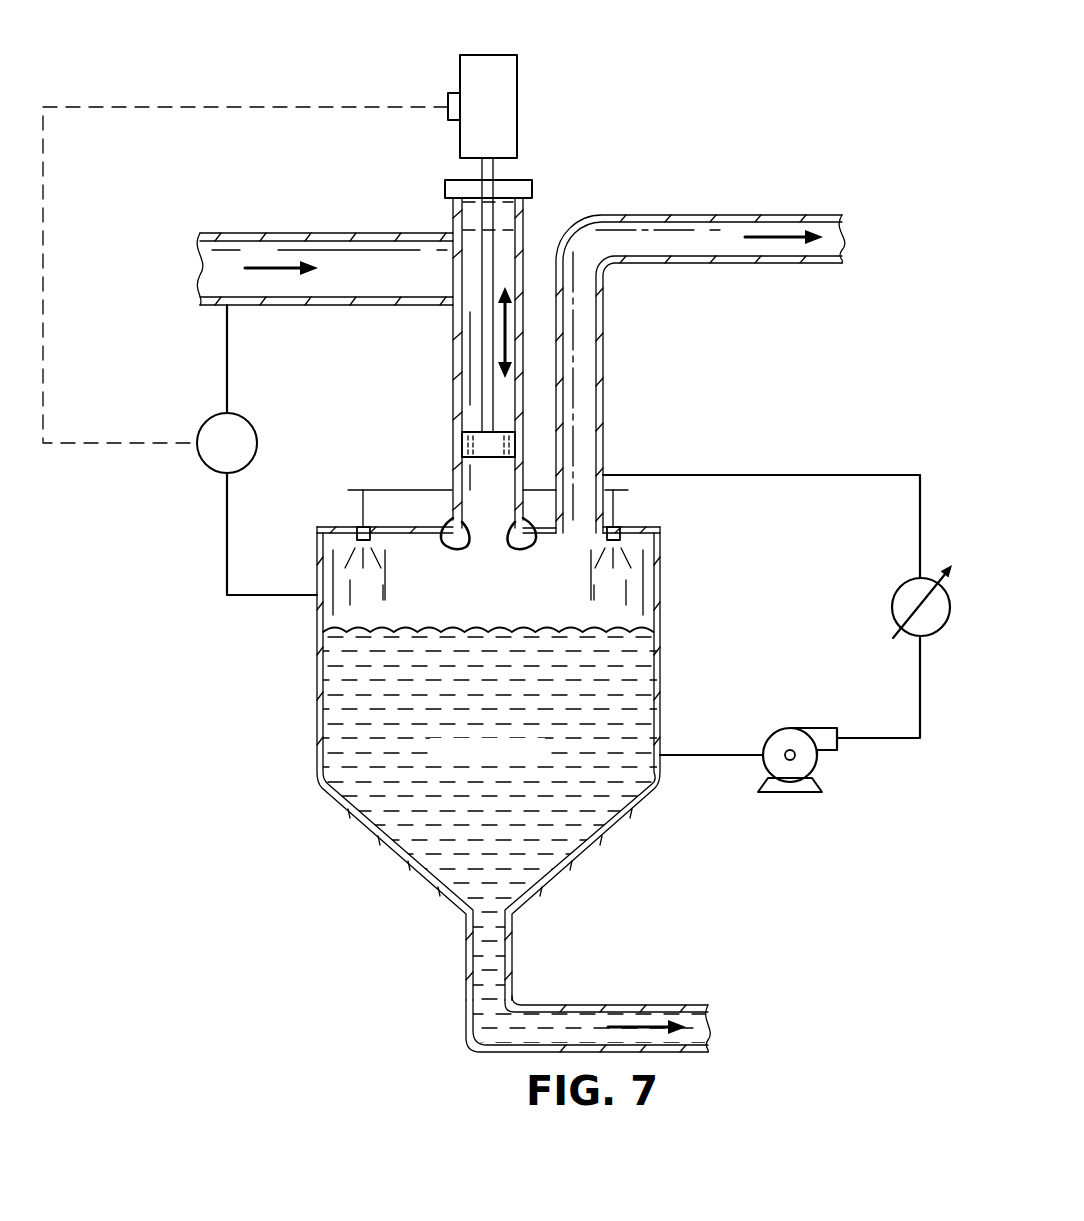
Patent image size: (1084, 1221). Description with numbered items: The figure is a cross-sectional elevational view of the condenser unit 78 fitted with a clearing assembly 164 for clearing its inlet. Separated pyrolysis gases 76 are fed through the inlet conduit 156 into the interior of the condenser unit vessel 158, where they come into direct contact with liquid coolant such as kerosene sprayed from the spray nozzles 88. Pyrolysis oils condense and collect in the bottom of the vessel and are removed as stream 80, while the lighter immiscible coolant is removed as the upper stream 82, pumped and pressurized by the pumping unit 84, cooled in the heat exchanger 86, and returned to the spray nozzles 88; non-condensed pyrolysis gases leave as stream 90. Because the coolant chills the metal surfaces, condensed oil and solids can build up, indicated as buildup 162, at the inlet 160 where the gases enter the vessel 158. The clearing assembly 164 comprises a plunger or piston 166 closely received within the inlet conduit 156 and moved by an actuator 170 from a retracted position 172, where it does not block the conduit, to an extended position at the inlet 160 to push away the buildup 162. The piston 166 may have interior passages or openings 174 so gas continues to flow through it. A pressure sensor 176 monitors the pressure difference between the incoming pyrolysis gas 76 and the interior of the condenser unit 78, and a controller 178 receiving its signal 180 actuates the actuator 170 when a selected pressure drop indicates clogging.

The pyrolysis gases 76 is at (262, 266).
The condenser unit 78 is at (476, 766).
The stream 80 is at (645, 1005).
The upper stream 82 is at (718, 758).
The pumping unit 84 is at (800, 727).
The heat exchanger 86 is at (903, 587).
The spray nozzles 88 is at (352, 525).
The stream 90 is at (778, 240).
The inlet conduit 156 is at (453, 371).
The condenser unit vessel 158 is at (315, 745).
The inlet 160 is at (483, 551).
The pyrolysis oil or solids buildup 162 is at (527, 547).
The clearing assembly 164 is at (508, 222).
The plunger or piston 166 is at (464, 432).
The actuator 170 is at (518, 105).
The retracted position 172 is at (528, 210).
The interior passages or openings 174 is at (455, 450).
The pressure sensor 176 is at (210, 421).
The controller 178 is at (455, 93).
The signal 180 is at (108, 449).